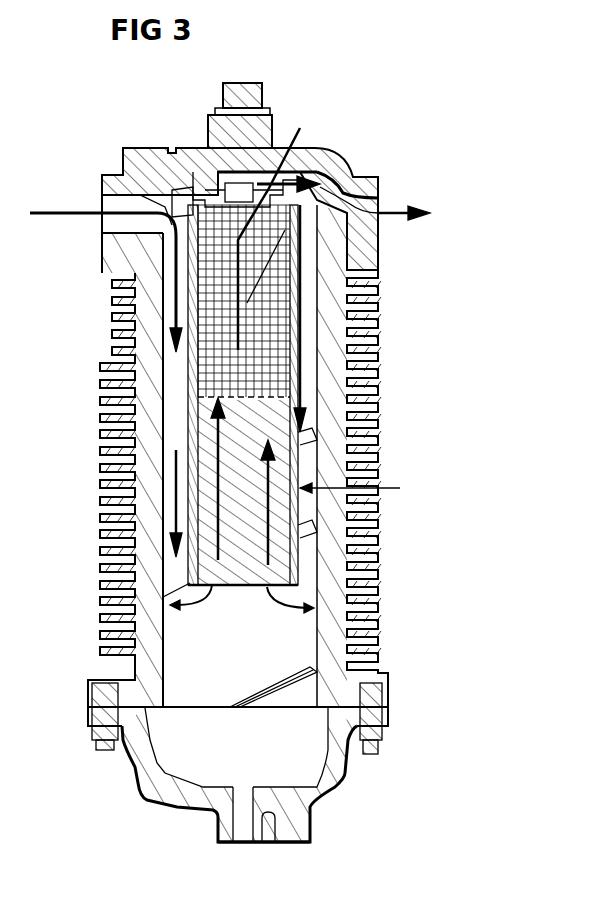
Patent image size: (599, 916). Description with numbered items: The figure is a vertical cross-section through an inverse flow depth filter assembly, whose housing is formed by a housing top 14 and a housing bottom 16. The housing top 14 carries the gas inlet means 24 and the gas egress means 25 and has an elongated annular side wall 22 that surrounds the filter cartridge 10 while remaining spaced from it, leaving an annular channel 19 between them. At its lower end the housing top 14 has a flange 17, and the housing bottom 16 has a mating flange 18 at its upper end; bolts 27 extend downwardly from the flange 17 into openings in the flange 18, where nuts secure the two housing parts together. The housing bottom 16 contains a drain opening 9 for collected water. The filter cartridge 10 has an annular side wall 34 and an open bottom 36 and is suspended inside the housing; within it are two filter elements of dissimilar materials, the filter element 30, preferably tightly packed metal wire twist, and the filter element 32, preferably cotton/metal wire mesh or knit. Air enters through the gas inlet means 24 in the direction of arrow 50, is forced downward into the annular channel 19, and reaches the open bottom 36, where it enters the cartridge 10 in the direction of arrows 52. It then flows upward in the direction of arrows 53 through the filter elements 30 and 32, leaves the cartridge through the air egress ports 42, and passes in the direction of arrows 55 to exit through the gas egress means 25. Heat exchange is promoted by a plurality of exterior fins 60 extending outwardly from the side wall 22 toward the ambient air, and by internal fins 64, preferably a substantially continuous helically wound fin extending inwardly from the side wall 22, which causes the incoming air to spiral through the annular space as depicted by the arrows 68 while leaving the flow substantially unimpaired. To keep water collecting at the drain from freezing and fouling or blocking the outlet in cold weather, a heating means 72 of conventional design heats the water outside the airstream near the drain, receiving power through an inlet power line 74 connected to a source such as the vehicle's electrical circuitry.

The drain opening 9 is at (250, 785).
The filter cartridge 10 is at (363, 488).
The housing top 14 is at (172, 182).
The housing bottom 16 is at (128, 794).
The flange 17 is at (393, 697).
The flange 18 is at (387, 720).
The annular channel 19 is at (173, 376).
The annular side wall 22 is at (152, 430).
The gas inlet means 24 is at (118, 205).
The gas egress means 25 is at (368, 200).
The bolts 27 is at (380, 755).
The filter element 30 is at (258, 499).
The filter element 32 is at (249, 262).
The annular side wall 34 is at (290, 560).
The open bottom 36 is at (252, 593).
The air egress ports 42 is at (244, 163).
The arrow 50 is at (75, 218).
The arrows 52 is at (208, 605).
The arrows 53 is at (285, 455).
The arrows 55 is at (320, 170).
The exterior fins 60 is at (102, 473).
The internal fins 64 is at (293, 677).
The arrows 68 is at (308, 327).
The heating means 72 is at (223, 828).
The inlet power line 74 is at (264, 861).